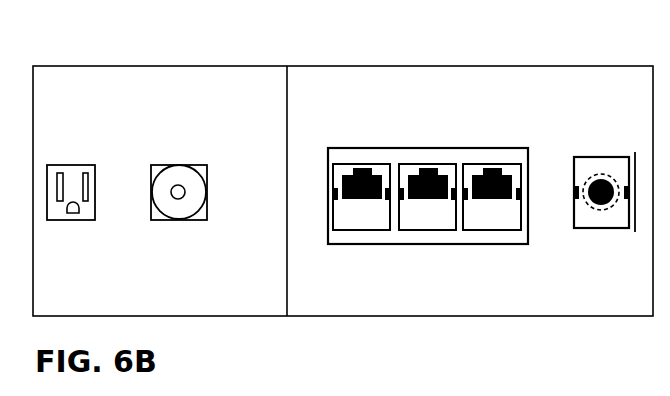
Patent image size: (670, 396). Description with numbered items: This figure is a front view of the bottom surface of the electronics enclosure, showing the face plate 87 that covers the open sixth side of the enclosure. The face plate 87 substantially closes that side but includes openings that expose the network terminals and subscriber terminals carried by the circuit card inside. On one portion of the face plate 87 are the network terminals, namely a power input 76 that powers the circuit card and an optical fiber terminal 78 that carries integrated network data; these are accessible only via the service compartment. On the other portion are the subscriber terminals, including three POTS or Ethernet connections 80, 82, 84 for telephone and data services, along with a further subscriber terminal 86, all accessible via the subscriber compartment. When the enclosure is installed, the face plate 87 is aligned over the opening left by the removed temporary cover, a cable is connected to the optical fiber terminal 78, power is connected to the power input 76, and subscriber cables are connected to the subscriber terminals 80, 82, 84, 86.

The face plate 87 is at (312, 66).
The power input 76 is at (70, 165).
The optical fiber terminal 78 is at (177, 165).
The POTS or Ethernet connection 80 is at (358, 163).
The POTS or Ethernet connection 82 is at (430, 163).
The POTS or Ethernet connection 84 is at (494, 163).
The subscriber terminal 86 is at (597, 157).